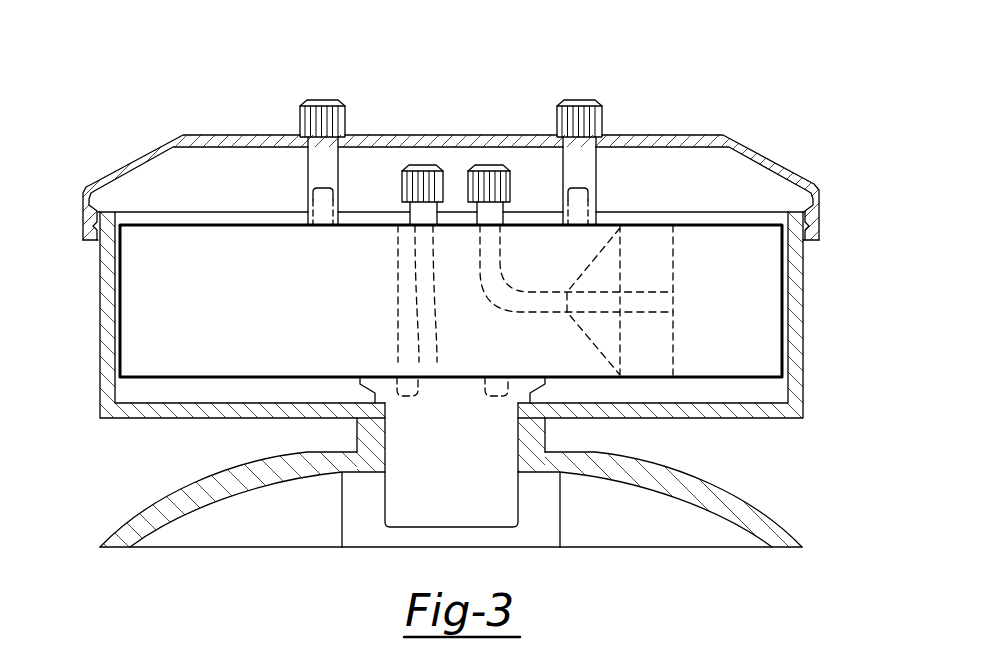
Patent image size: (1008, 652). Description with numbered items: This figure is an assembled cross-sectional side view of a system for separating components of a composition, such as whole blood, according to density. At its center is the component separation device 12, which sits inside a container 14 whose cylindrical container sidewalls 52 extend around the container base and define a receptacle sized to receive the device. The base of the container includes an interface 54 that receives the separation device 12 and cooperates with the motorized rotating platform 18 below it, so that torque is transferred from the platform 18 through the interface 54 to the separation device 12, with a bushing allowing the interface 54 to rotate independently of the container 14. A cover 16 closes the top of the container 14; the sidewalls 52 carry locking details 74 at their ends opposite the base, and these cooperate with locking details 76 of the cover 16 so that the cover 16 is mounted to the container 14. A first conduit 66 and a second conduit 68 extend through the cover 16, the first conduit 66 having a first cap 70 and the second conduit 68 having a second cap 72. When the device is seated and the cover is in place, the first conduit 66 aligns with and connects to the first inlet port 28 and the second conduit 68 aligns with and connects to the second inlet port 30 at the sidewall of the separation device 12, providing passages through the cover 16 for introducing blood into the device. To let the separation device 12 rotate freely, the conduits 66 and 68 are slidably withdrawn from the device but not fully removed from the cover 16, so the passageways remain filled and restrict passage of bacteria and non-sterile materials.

The component separation device 12 is at (738, 380).
The container 14 is at (452, 342).
The cover 16 is at (761, 156).
The motorized rotating platform 18 is at (140, 521).
The first inlet port 28 is at (621, 230).
The second inlet port 30 is at (313, 210).
The container sidewalls 52 is at (100, 360).
The interface 54 is at (519, 456).
The first conduit 66 is at (598, 190).
The second conduit 68 is at (308, 190).
The first cap 70 is at (618, 120).
The second cap 72 is at (288, 138).
The locking details of the container 74 is at (86, 207).
The locking details of the cover 76 is at (96, 241).